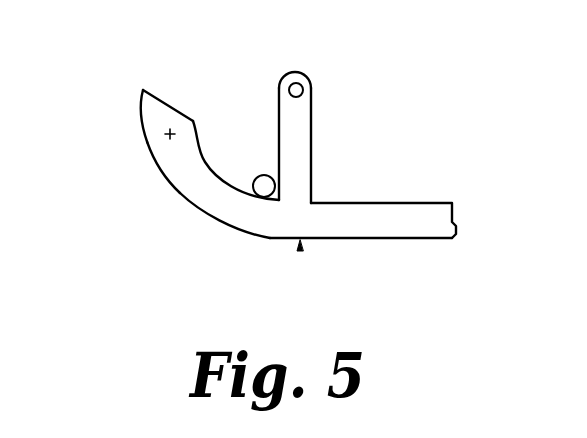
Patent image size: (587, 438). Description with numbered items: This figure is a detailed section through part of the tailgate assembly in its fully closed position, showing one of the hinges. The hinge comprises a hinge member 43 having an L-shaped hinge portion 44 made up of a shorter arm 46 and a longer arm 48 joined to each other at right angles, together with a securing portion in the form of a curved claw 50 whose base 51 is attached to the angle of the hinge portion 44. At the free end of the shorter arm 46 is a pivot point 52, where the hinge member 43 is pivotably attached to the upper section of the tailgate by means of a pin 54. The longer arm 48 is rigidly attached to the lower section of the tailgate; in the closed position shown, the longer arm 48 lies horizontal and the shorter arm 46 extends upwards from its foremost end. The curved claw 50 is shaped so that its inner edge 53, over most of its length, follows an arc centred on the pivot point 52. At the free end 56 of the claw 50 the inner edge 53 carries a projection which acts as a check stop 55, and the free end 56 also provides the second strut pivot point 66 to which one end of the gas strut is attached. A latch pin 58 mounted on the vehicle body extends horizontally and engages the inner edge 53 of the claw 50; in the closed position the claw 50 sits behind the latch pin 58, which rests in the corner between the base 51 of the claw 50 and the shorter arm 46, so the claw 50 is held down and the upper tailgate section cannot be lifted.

The hinge member 43 is at (300, 248).
The L-shaped hinge portion 44 is at (390, 231).
The shorter arm 46 is at (302, 149).
The longer arm 48 is at (418, 213).
The curved claw 50 is at (185, 195).
The base 51 is at (247, 220).
The pivot point 52 is at (297, 89).
The inner edge 53 is at (216, 176).
The pin 54 is at (296, 88).
The check stop 55 is at (197, 122).
The free end 56 is at (155, 125).
The latch pin 58 is at (258, 175).
The second strut pivot point 66 is at (170, 134).